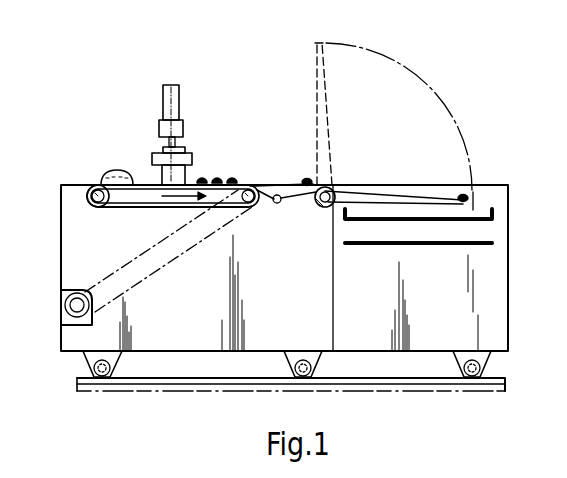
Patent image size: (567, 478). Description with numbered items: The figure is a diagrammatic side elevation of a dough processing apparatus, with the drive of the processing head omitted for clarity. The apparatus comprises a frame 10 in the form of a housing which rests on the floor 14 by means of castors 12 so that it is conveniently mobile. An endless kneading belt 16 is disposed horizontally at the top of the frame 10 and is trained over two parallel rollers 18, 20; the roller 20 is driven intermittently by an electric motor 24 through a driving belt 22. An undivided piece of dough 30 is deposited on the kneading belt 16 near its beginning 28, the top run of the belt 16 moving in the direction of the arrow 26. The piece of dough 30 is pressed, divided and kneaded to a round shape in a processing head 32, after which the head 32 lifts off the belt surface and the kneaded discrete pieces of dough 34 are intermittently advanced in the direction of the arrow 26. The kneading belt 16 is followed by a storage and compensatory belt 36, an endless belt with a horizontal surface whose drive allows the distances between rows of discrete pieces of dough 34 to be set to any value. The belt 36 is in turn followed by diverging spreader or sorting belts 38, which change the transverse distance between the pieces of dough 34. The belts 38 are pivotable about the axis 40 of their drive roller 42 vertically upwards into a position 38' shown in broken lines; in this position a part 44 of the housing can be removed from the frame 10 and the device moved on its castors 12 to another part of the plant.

The frame 10 is at (61, 262).
The castors 12 is at (292, 372).
The floor 14 is at (402, 374).
The kneading belt 16 is at (132, 214).
The roller 18 is at (92, 196).
The roller 20 is at (249, 186).
The driving belt 22 is at (90, 285).
The electric motor 24 is at (68, 318).
The arrow 26 is at (187, 207).
The beginning of the kneading belt 28 is at (96, 186).
The piece of dough 30 is at (119, 170).
The processing head 32 is at (186, 148).
The discrete pieces of dough 34 is at (232, 177).
The storage and compensatory belt 36 is at (279, 184).
The spreader or sorting belts 38 is at (406, 126).
The raised position of the spreader belts 38' is at (395, 105).
The axis 40 is at (317, 207).
The drive roller 42 is at (324, 208).
The part of the housing 44 is at (497, 270).